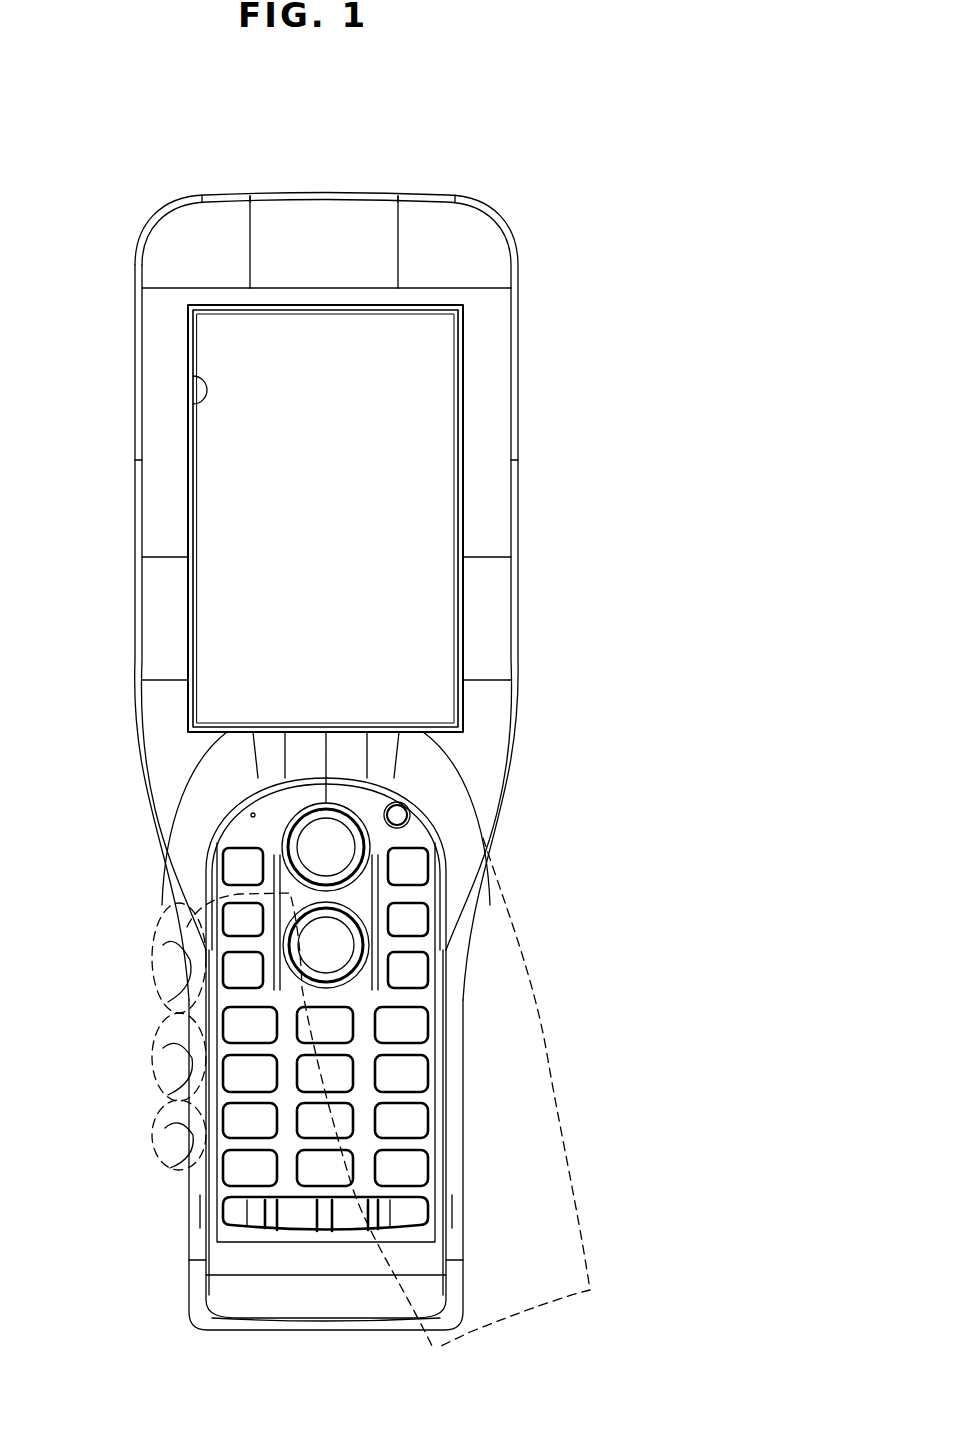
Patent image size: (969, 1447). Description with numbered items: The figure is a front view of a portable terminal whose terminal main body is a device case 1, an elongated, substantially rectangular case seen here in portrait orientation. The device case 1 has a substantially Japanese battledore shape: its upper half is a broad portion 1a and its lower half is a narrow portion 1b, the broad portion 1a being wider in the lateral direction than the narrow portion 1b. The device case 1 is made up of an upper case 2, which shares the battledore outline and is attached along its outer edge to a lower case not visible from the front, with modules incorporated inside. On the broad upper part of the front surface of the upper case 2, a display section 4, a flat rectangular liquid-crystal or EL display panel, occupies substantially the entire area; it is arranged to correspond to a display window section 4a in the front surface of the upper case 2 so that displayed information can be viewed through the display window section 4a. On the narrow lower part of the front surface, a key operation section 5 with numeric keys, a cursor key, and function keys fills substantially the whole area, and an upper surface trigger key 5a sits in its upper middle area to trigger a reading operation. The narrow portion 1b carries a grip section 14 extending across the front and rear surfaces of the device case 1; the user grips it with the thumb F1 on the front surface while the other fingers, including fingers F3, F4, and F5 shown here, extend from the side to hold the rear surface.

The device case 1 is at (215, 188).
The broad portion 1a is at (528, 509).
The narrow portion 1b is at (475, 1037).
The upper case 2 is at (370, 232).
The display section 4 is at (430, 370).
The display window section 4a is at (193, 401).
The key operation section 5 is at (412, 965).
The upper surface trigger key 5a is at (310, 842).
The grip section 14 is at (460, 1141).
The thumb F1 is at (240, 893).
The finger F3 is at (157, 990).
The finger F4 is at (157, 1085).
The finger F5 is at (157, 1150).